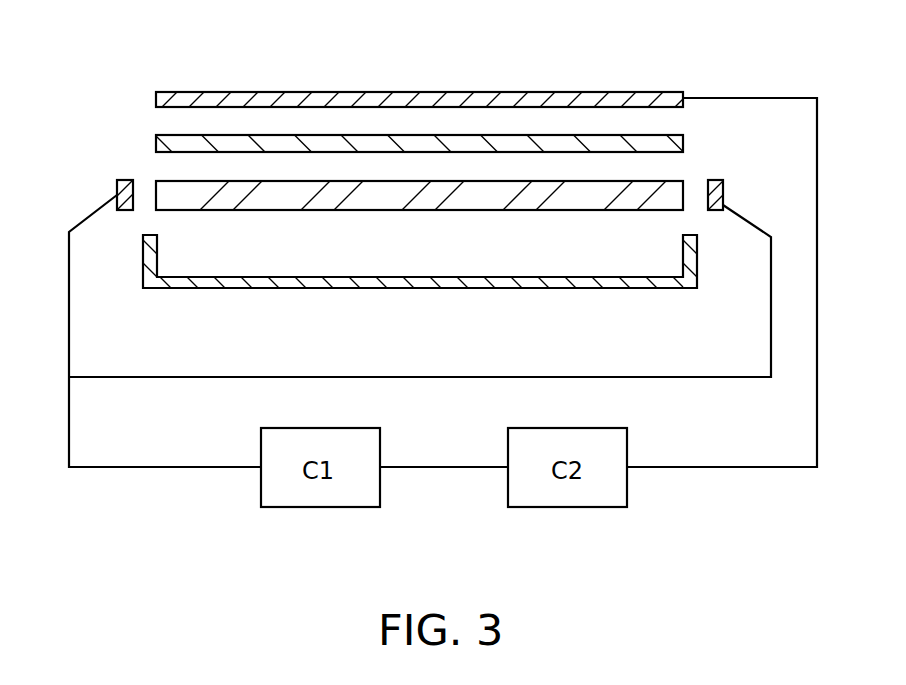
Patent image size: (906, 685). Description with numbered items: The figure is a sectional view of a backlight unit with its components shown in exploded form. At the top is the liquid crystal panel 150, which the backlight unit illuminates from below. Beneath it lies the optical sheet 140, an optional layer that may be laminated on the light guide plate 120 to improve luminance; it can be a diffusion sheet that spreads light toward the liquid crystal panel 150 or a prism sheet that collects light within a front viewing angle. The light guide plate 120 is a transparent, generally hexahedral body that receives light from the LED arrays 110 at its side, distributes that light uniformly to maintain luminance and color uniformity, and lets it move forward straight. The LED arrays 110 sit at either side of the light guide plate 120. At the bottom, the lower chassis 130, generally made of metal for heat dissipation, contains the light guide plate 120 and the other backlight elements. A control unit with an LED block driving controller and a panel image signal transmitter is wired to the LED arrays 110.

The LED arrays 110 is at (117, 184).
The light guide plate 120 is at (177, 183).
The lower chassis 130 is at (172, 288).
The optical sheet 140 is at (684, 143).
The liquid crystal panel 150 is at (642, 97).